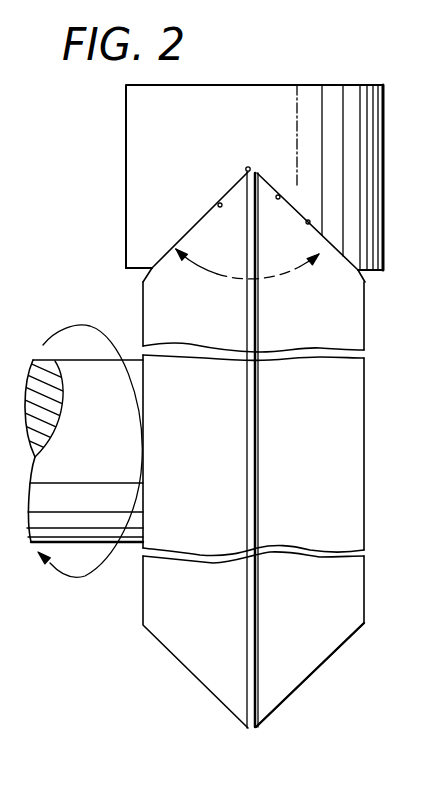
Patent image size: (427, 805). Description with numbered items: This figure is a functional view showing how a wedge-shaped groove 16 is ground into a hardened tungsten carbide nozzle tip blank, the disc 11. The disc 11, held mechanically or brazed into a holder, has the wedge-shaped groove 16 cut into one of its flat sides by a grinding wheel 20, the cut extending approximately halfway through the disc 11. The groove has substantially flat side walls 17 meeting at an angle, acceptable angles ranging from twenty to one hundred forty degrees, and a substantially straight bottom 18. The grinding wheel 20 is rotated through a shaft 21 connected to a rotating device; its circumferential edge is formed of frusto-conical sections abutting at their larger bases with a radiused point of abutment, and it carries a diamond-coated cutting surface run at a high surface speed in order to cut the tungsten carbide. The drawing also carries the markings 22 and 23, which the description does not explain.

The disc 11 is at (383, 127).
The wedge-shaped groove 16 is at (308, 226).
The side walls 17 is at (218, 205).
The bottom of the wedge-shaped groove 18 is at (258, 152).
The grinding wheel 20 is at (152, 601).
The shaft 21 is at (65, 362).
The swing arrow 22 is at (310, 265).
The central rib 23 is at (246, 178).